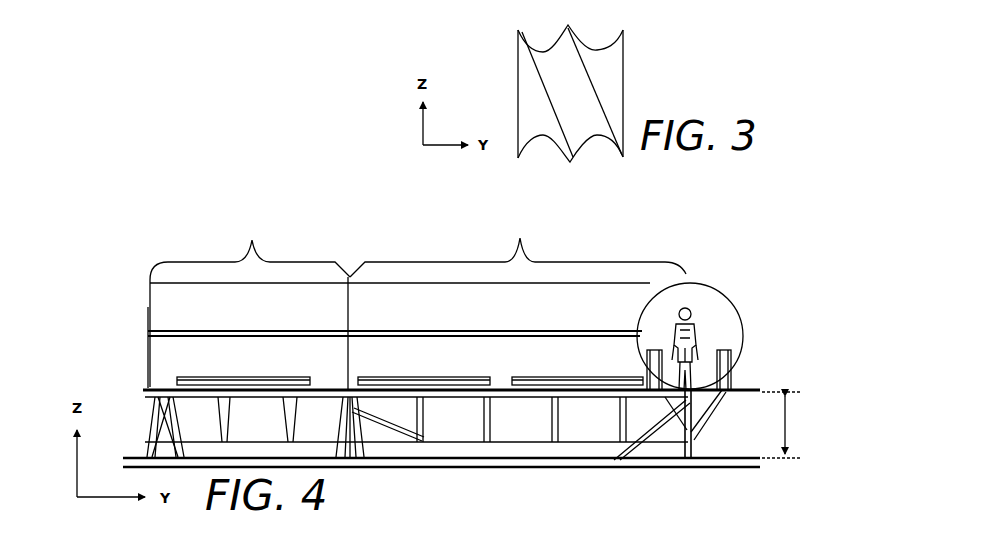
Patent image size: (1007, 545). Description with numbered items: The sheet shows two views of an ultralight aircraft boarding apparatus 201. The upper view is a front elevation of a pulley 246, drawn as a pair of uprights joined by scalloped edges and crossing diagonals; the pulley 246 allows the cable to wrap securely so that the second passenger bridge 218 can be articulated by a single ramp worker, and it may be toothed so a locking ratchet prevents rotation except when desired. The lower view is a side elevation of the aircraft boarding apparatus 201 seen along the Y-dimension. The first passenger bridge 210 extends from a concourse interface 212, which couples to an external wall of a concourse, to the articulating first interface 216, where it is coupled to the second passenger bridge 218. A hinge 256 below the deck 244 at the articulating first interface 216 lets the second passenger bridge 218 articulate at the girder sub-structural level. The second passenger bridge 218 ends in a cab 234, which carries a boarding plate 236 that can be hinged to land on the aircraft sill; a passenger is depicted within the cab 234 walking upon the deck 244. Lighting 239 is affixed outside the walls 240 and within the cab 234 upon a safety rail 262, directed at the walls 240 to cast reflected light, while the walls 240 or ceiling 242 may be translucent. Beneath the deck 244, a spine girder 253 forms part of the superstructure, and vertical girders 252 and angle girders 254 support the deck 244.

In FIG. 4, the aircraft boarding apparatus 201 is at (170, 220).
In FIG. 4, the first passenger bridge 210 is at (250, 301).
In FIG. 4, the concourse interface 212 is at (148, 307).
In FIG. 4, the articulating first interface 216 is at (348, 305).
In FIG. 4, the second passenger bridge 218 is at (517, 247).
In FIG. 4, the cab 234 is at (692, 282).
In FIG. 4, the boarding plate 236 is at (793, 420).
In FIG. 4, the lighting 239 is at (253, 375).
In FIG. 4, the walls 240 is at (731, 352).
In FIG. 4, the ceiling 242 is at (730, 298).
In FIG. 4, the deck 244 is at (735, 389).
In FIG. 3, the pulley 246 is at (632, 45).
In FIG. 4, the vertical girders 252 is at (618, 468).
In FIG. 4, the spine girder 253 is at (258, 437).
In FIG. 4, the angle girders 254 is at (712, 422).
In FIG. 4, the hinge 256 is at (363, 447).
In FIG. 4, the safety rail 262 is at (722, 335).